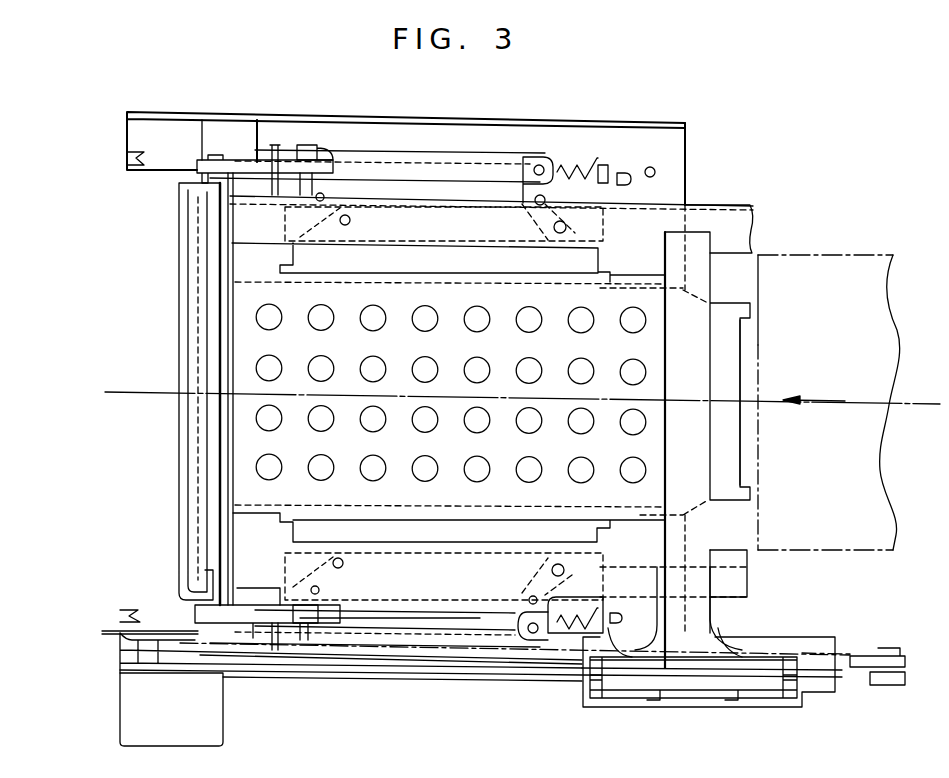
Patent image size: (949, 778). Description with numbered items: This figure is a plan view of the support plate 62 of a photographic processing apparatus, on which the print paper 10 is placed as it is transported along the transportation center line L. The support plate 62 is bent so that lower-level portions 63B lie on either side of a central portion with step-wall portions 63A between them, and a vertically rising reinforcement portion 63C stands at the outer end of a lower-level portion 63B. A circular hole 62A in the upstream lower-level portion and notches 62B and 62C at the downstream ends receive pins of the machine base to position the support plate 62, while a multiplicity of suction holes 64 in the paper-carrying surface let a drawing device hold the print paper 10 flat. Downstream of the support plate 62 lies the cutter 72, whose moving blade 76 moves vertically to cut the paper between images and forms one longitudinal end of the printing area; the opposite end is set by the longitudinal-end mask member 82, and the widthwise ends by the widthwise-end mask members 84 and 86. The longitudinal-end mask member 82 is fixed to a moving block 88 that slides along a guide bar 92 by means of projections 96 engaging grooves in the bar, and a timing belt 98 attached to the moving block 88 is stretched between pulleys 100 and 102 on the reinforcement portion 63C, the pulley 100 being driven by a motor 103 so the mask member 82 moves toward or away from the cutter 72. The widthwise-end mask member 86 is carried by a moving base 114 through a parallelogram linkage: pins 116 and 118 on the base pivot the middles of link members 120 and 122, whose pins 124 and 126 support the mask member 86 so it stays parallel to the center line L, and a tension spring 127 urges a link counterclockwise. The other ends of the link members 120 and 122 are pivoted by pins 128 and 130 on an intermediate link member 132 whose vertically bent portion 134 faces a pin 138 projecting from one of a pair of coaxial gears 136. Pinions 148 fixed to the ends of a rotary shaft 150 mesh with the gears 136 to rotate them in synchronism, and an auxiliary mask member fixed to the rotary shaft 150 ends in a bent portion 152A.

The print paper 10 is at (834, 256).
The support plate 62 is at (725, 460).
The circular hole 62A is at (656, 175).
The notch 62B is at (132, 157).
The notch 62C is at (118, 610).
The step-wall portion 63A is at (420, 268).
The lower-level portion 63B is at (674, 154).
The reinforcement portion 63C is at (524, 118).
The suction holes 64 is at (646, 376).
The cutter 72 is at (178, 455).
The moving blade 76 is at (190, 413).
The longitudinal-end mask member 82 is at (710, 370).
The widthwise-end mask member 84 is at (742, 206).
The widthwise-end mask member 86 is at (744, 580).
The moving block 88 is at (697, 707).
The guide bar 92 is at (418, 686).
The projections 96 is at (652, 658).
The timing belt 98 is at (856, 652).
The pulley 100 is at (125, 655).
The pulley 102 is at (886, 648).
The motor 103 is at (125, 686).
The moving base 114 is at (605, 600).
The pin 116 is at (543, 190).
The pin 118 is at (324, 195).
The link member 120 is at (522, 186).
The link member 122 is at (390, 214).
The pin 124 is at (553, 228).
The pin 126 is at (350, 222).
The tension spring 127 is at (590, 168).
The pin 128 is at (538, 158).
The pin 130 is at (330, 618).
The intermediate link member 132 is at (397, 142).
The vertically bent portion 134 is at (265, 132).
The gear 136 is at (252, 158).
The pin 138 is at (307, 148).
The pinion 148 is at (197, 160).
The rotary shaft 150 is at (195, 258).
The bent portion 152A is at (235, 335).
The transportation center line L is at (922, 405).